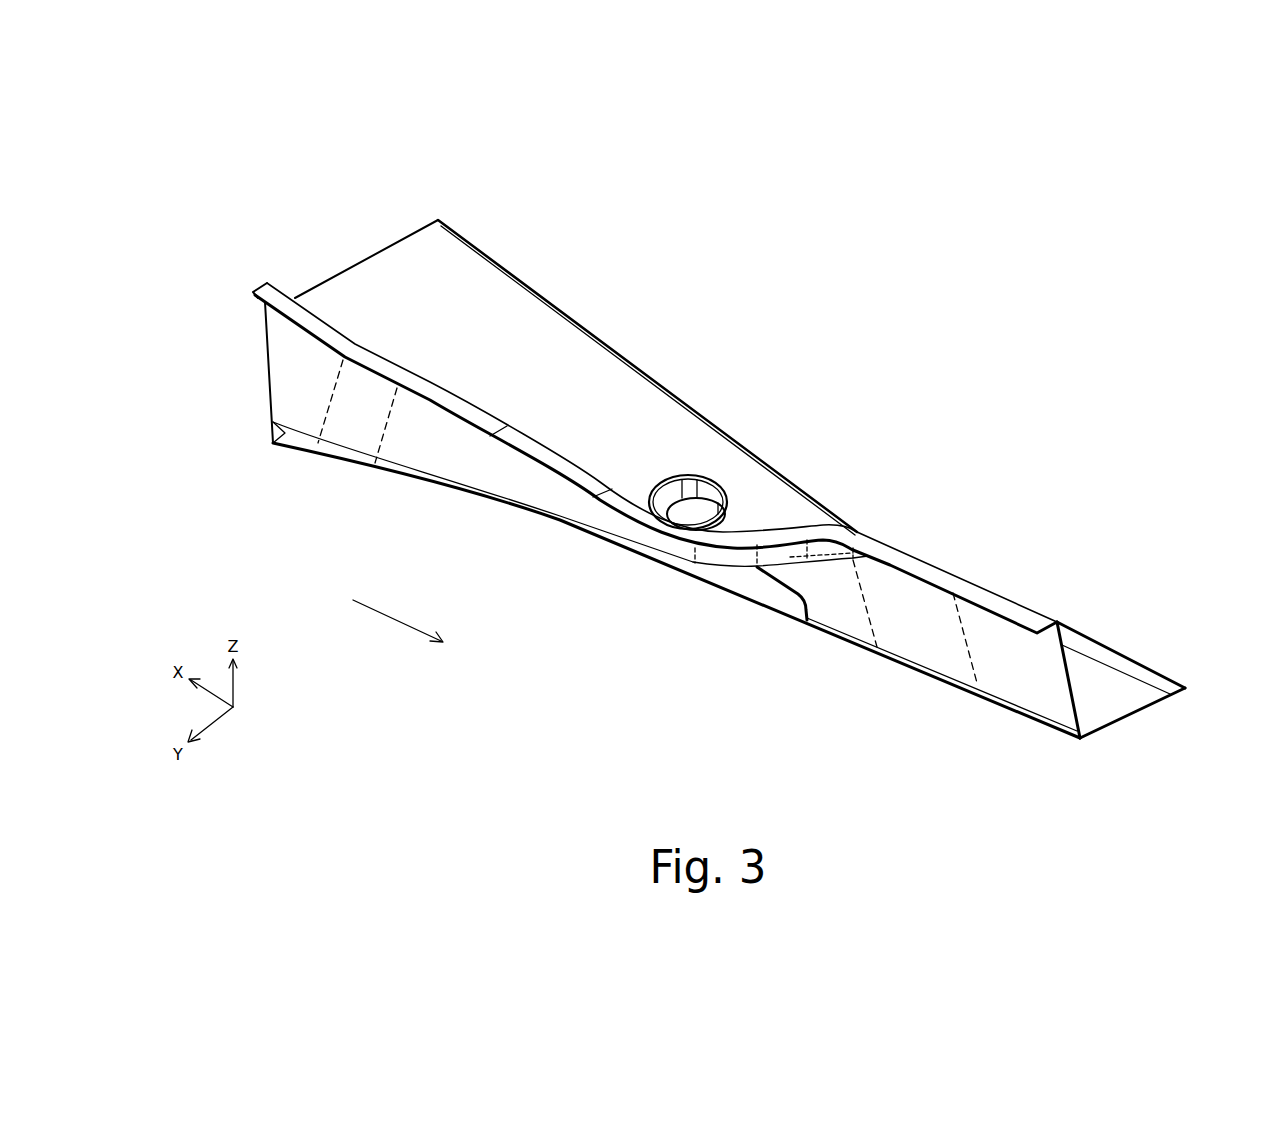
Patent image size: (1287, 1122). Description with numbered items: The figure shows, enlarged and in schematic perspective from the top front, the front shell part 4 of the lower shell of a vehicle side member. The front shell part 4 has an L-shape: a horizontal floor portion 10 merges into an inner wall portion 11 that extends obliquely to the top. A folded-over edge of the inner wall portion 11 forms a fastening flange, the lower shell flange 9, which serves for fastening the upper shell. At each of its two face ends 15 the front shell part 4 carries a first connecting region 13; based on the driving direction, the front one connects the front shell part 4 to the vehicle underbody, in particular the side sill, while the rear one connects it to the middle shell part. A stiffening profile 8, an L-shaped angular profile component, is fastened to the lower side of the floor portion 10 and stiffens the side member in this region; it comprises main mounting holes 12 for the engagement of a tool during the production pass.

The front shell part 4 is at (400, 140).
The stiffening profile 8 is at (450, 462).
The lower shell flange 9 is at (922, 567).
The floor portion 10 is at (1085, 678).
The inner wall portion 11 is at (1037, 690).
The main mounting hole 12 is at (697, 478).
The first connecting region 13 is at (342, 292).
The face end 15 is at (382, 250).